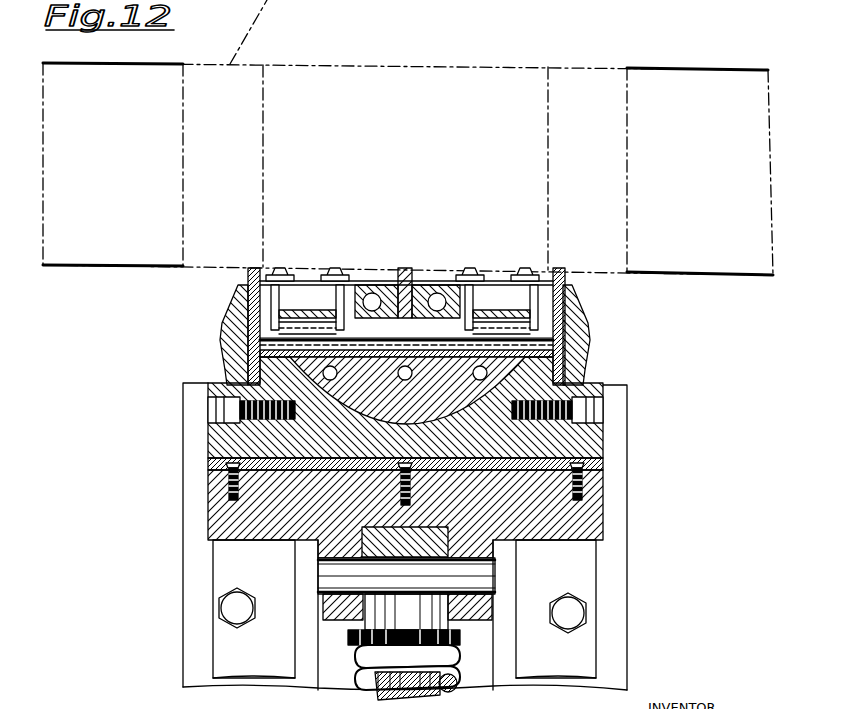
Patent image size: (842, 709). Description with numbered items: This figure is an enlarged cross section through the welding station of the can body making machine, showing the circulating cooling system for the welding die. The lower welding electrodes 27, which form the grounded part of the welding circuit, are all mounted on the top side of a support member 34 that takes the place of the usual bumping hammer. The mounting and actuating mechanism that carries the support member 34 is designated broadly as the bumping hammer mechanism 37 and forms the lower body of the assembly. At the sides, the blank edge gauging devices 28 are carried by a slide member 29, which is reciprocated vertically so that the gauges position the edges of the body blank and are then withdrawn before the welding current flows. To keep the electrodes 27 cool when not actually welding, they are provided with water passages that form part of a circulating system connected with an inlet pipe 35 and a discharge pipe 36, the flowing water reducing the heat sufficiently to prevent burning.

The lower welding electrodes 27 is at (337, 268).
The blank edge gauging devices 28 is at (252, 270).
The slide member 29 is at (232, 331).
The support member 34 is at (352, 296).
The pipe 35 is at (440, 336).
The pipe 36 is at (355, 312).
The bumping hammer mechanism 37 is at (585, 517).